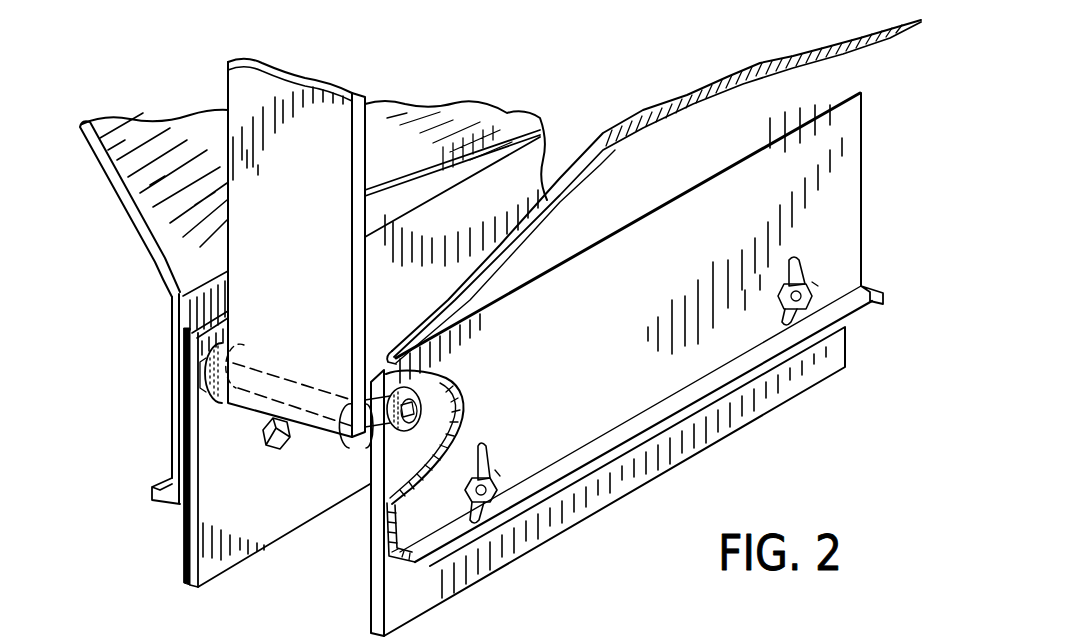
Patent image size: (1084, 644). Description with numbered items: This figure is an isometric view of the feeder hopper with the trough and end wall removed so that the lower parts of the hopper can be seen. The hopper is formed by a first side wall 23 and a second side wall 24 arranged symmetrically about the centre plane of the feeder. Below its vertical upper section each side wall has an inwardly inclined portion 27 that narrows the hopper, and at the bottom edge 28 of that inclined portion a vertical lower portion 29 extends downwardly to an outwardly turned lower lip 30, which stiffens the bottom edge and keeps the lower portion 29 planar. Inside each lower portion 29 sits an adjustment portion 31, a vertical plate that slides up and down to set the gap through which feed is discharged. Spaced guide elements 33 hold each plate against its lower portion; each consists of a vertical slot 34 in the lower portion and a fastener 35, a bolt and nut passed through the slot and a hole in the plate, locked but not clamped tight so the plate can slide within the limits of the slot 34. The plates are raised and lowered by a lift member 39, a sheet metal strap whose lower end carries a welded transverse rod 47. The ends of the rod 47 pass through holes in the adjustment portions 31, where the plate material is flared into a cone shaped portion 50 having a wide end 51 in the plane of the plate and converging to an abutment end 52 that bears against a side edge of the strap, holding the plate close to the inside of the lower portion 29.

The first side wall 23 is at (133, 230).
The second side wall 24 is at (652, 188).
The inclined portion 27 is at (152, 272).
The bottom edge 28 is at (171, 302).
The vertical lower portion 29 is at (173, 378).
The lower lip 30 is at (166, 479).
The adjustment portion 31 is at (186, 537).
The guide element 33 is at (498, 470).
The vertical slot 34 is at (482, 446).
The fastener 35 is at (279, 452).
The lift member 39 is at (252, 90).
The transverse rod 47 is at (306, 382).
The cone shaped portion 50 is at (212, 398).
The wide end 51 is at (451, 372).
The abutment end 52 is at (257, 367).